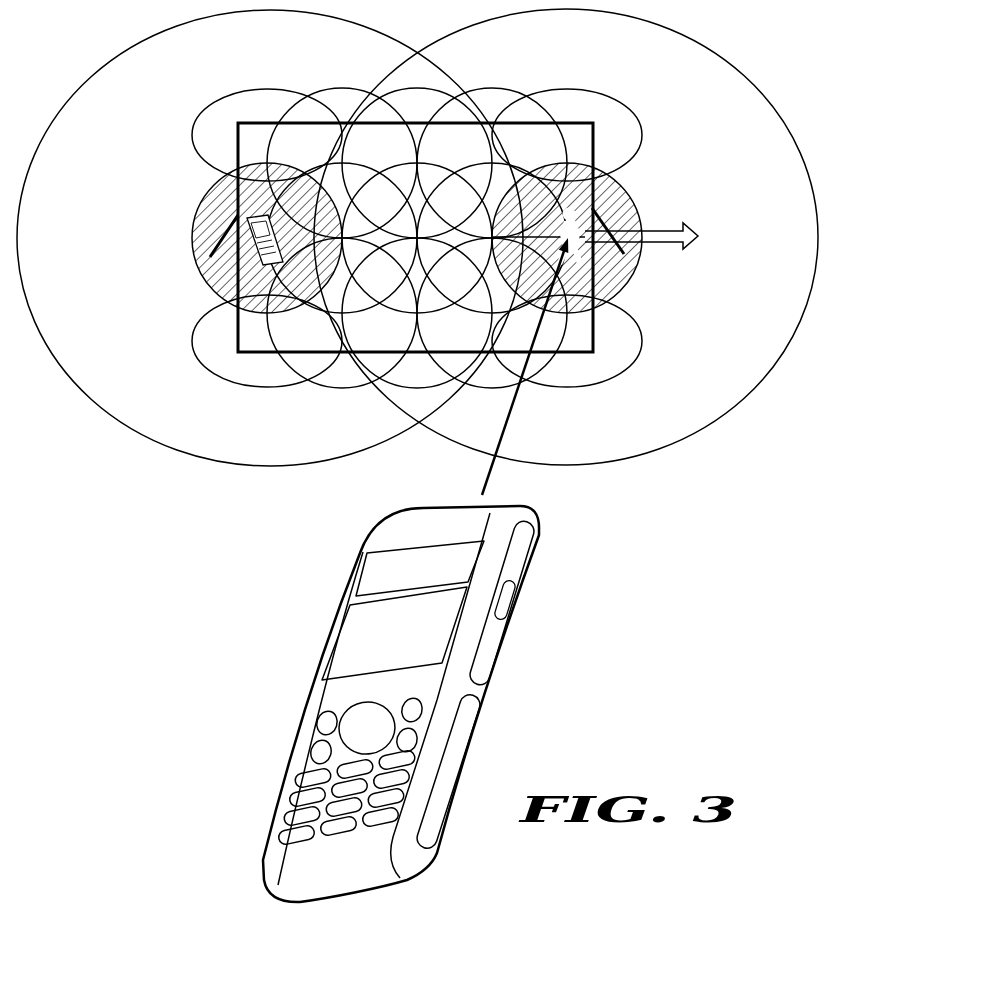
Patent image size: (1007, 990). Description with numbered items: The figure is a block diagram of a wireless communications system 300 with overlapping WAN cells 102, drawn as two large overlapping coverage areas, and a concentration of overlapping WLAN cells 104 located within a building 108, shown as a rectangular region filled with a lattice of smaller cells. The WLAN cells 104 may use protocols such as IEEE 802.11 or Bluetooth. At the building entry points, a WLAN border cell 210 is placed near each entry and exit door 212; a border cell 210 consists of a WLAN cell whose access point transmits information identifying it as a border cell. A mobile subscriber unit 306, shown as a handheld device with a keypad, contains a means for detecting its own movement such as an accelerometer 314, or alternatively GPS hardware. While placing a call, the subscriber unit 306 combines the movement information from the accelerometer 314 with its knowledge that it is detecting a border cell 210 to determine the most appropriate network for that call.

The WAN cell 102 is at (288, 442).
The WLAN cell 104 is at (430, 88).
The building 108 is at (238, 148).
The border cell 210 is at (197, 210).
The entry and exit door 212 is at (217, 249).
The mobile communication device 300 is at (453, 570).
The mobile subscriber unit 306 is at (305, 710).
The accelerometer 314 is at (360, 572).